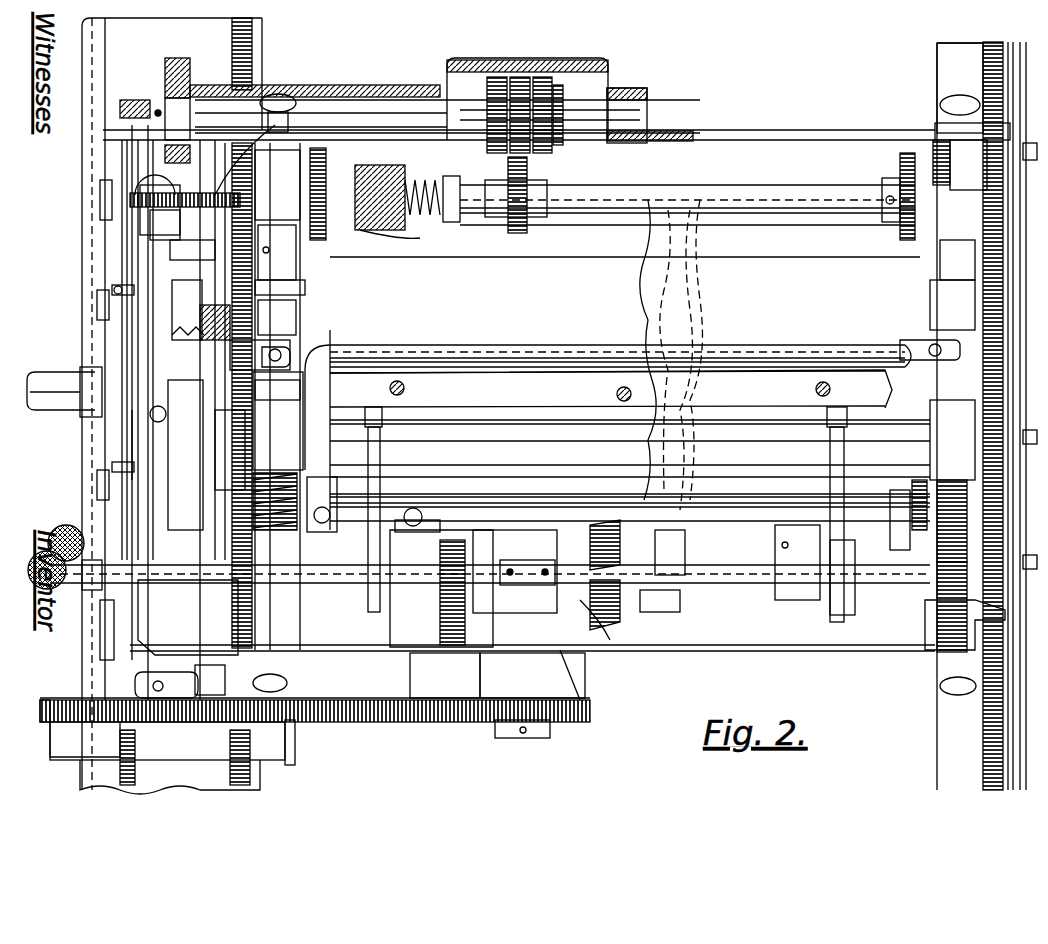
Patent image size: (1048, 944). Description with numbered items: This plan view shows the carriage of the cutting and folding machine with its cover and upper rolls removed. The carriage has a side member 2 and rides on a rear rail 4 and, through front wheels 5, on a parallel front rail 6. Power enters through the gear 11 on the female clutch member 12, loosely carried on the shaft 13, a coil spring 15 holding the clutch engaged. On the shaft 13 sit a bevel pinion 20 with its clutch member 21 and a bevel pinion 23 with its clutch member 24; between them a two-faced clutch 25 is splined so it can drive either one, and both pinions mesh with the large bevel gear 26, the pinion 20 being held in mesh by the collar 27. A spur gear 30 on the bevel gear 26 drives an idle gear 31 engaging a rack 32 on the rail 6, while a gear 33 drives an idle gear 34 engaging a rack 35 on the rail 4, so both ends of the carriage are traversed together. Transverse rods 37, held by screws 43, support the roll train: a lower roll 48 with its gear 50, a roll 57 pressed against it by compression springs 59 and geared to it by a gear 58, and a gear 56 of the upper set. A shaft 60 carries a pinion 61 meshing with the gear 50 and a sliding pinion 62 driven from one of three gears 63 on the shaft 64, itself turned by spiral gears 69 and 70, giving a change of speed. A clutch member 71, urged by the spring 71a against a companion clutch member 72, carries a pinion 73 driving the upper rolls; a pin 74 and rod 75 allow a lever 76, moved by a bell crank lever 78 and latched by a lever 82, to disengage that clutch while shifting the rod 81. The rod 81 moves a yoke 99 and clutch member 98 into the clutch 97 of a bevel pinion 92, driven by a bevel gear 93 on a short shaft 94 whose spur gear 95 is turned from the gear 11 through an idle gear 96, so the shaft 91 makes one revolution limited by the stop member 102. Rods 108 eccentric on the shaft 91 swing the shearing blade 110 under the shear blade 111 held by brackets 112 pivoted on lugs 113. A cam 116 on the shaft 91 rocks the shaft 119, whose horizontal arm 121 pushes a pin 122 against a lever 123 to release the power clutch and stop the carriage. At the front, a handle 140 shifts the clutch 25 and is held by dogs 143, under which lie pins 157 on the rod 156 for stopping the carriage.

The side member 2 is at (852, 648).
The rail 4 is at (945, 72).
The wheels 5 is at (105, 215).
The rail 6 is at (110, 778).
The gear 11 is at (300, 700).
The female member of clutch 12 is at (290, 760).
The shaft 13 is at (205, 500).
The coil spring 15 is at (40, 705).
The bevel pinion 20 is at (300, 390).
The clutch member 21 is at (281, 350).
The bevel pinion 23 is at (140, 185).
The clutch member 24 is at (150, 228).
The two-faced clutch 25 is at (170, 255).
The large bevel gear 26 is at (262, 355).
The collar 27 is at (255, 392).
The spur gear 30 is at (296, 310).
The idle gear 31 is at (230, 465).
The rack 32 is at (252, 50).
The gear 33 is at (900, 350).
The idle gear 34 is at (975, 605).
The rack 35 is at (940, 60).
The transverse rods 37 is at (185, 607).
The screws 43 is at (285, 100).
The roll 48 is at (795, 225).
The gear 50 is at (935, 175).
The gear 56 is at (945, 405).
The roll 57 is at (890, 510).
The gear 58 is at (920, 530).
The compression springs 59 is at (253, 530).
The shaft 60 is at (745, 190).
The pinion 61 is at (900, 160).
The pinion 62 is at (527, 228).
The gears 63 is at (520, 90).
The shaft 64 is at (360, 110).
The spiral gear 69 is at (180, 72).
The spiral gear 70 is at (120, 109).
The clutch member 71 is at (410, 190).
The spring 71a is at (200, 320).
The clutch member 72 is at (401, 240).
The pinion 73 is at (326, 160).
The pin 74 is at (390, 170).
The rod 75 is at (262, 135).
The lever 76 is at (172, 300).
The bell crank lever 78 is at (66, 525).
The rod 81 is at (790, 580).
The lever 82 is at (47, 550).
The shaft 91 is at (840, 575).
The bevel pinion 92 is at (640, 525).
The bevel gear 93 is at (600, 615).
The short shaft 94 is at (540, 738).
The spur gear 95 is at (583, 690).
The idle gear 96 is at (420, 726).
The clutch 97 is at (600, 630).
The clutch member 98 is at (540, 540).
The yoke 99 is at (520, 560).
The stop member 102 is at (460, 527).
The rods 108 is at (380, 457).
The shearing blade 110 is at (555, 400).
The shear blade 111 is at (520, 348).
The brackets 112 is at (270, 300).
The lugs 113 is at (258, 260).
The cam 116 is at (685, 545).
The shaft 119 is at (660, 612).
The horizontal arm 121 is at (440, 580).
The pin 122 is at (225, 690).
The lever 123 is at (200, 722).
The handle 140 is at (60, 410).
The dog 143 is at (97, 310).
The rod 156 is at (130, 430).
The pins 157 is at (112, 290).